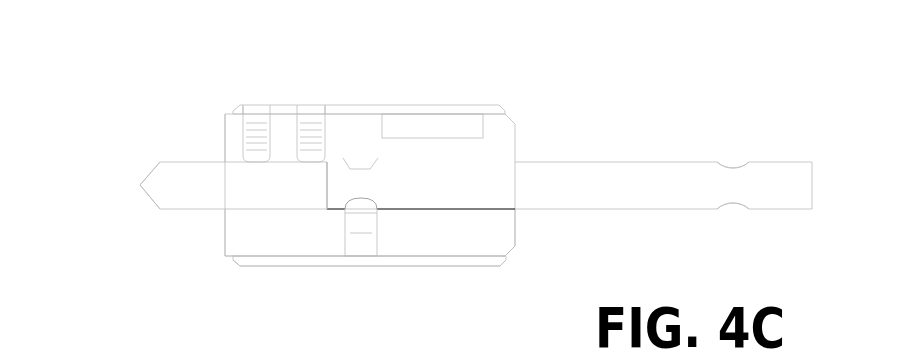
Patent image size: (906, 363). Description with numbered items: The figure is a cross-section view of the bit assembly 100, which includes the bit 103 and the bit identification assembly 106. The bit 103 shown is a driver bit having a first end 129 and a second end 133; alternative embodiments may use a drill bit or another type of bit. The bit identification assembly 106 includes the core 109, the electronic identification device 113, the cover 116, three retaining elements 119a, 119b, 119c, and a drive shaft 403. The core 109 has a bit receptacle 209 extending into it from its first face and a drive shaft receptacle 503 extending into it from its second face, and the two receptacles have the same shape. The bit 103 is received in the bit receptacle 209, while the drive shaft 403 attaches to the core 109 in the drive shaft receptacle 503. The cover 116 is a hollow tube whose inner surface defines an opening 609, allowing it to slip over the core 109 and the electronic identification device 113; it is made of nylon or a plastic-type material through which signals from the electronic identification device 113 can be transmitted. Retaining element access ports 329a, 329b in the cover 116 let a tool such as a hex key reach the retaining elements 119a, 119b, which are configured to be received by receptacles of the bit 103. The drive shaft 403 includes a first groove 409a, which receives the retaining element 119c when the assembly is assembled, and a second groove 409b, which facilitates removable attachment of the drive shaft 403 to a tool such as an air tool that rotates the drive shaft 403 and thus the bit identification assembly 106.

The bit assembly 100 is at (122, 117).
The bit 103 is at (192, 184).
The bit identification assembly 106 is at (504, 72).
The core 109 is at (503, 240).
The electronic identification device 113 is at (477, 122).
The cover 116 is at (293, 260).
The retaining element 119a is at (262, 120).
The retaining element 119b is at (312, 122).
The retaining element 119c is at (361, 242).
The first end 129 is at (139, 184).
The second end 133 is at (327, 182).
The bit receptacle 209 is at (225, 162).
The retaining element access port 329a is at (242, 110).
The retaining element access port 329b is at (326, 104).
The drive shaft 403 is at (593, 188).
The first groove 409a is at (363, 198).
The second groove 409b is at (735, 203).
The drive shaft receptacle 503 is at (515, 160).
The opening 609 is at (237, 255).